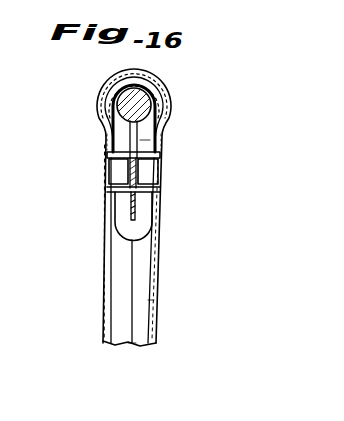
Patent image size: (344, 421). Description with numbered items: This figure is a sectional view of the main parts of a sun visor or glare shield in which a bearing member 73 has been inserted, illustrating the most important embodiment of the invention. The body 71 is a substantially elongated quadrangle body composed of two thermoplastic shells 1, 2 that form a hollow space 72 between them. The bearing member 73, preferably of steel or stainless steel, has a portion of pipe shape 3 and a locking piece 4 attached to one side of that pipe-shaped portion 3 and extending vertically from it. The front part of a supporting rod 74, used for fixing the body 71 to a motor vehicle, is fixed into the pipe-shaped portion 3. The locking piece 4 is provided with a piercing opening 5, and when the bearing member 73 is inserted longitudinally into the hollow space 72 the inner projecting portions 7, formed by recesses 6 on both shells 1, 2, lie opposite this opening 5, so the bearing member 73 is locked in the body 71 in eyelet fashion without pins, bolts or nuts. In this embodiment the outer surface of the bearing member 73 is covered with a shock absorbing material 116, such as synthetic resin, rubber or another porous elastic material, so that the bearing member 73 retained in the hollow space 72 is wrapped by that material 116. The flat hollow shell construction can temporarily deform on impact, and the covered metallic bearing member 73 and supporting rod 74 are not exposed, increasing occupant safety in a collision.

The thermoplastic shell 1 is at (104, 276).
The thermoplastic shell 2 is at (153, 323).
The portion of pipe shape 3 is at (145, 101).
The locking piece 4 is at (140, 219).
The piercing opening 5 is at (113, 166).
The recess 6 is at (113, 175).
The inner projecting portion 7 is at (112, 182).
The body 71 is at (153, 293).
The hollow space 72 is at (137, 338).
The bearing member 73 is at (103, 134).
The supporting rod 74 is at (160, 123).
The shock absorbing material 116 is at (158, 147).